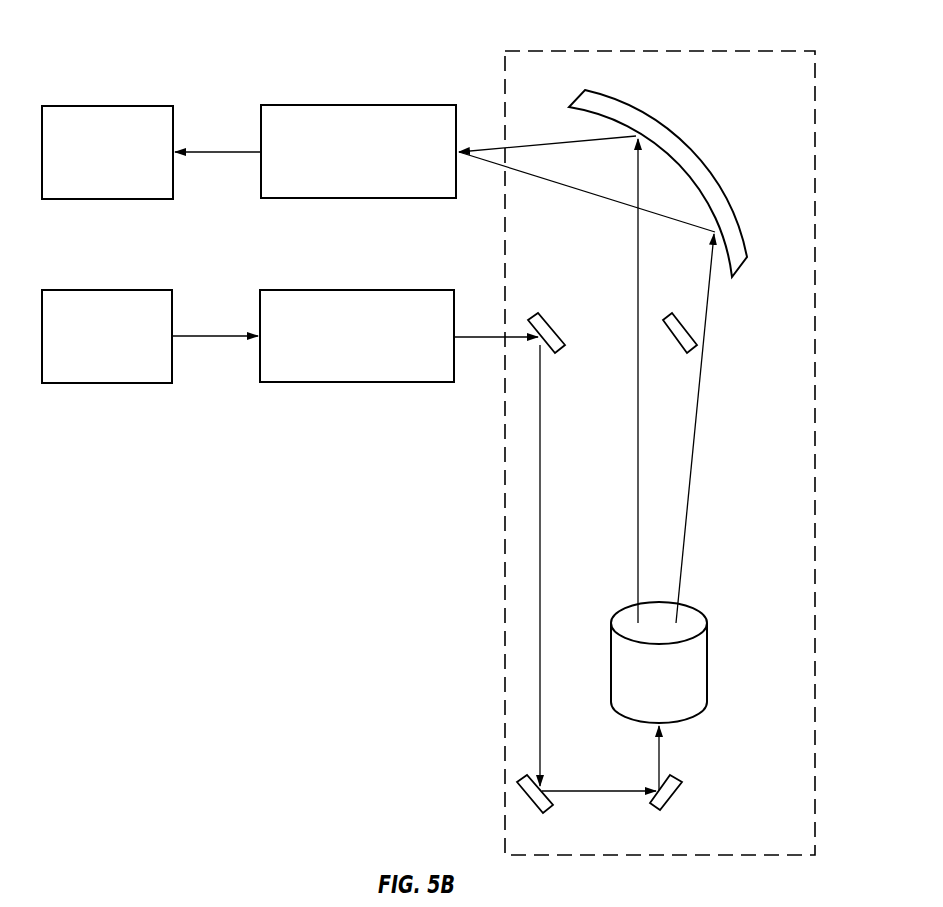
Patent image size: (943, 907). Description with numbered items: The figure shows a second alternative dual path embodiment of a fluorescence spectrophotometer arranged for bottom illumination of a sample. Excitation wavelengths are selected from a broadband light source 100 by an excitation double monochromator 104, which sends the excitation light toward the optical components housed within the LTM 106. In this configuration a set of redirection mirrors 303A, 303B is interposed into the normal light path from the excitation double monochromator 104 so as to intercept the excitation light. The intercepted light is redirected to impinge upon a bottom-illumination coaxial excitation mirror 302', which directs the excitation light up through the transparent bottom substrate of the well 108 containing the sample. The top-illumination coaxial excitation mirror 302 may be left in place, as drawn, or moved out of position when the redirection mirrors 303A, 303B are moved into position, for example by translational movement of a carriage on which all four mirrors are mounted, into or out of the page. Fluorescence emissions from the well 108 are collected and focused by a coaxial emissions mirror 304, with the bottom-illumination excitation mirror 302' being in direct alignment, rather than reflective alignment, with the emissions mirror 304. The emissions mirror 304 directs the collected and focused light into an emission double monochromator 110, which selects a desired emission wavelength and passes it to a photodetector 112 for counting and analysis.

The broadband light source 100 is at (107, 315).
The excitation double monochromator 104 is at (342, 315).
The LTM 106 is at (660, 434).
The well 108 is at (703, 662).
The emission double monochromator 110 is at (343, 133).
The photodetector 112 is at (107, 133).
The coaxial excitation mirror 302 is at (720, 320).
The bottom-illumination coaxial excitation mirror 302' is at (707, 801).
The redirection mirror 303A is at (580, 325).
The redirection mirror 303B is at (490, 801).
The coaxial emissions mirror 304 is at (666, 183).